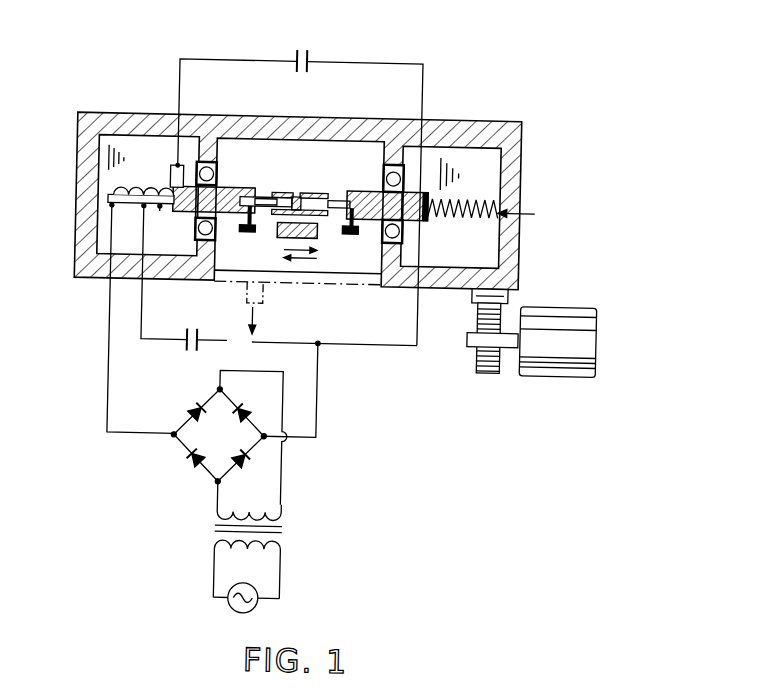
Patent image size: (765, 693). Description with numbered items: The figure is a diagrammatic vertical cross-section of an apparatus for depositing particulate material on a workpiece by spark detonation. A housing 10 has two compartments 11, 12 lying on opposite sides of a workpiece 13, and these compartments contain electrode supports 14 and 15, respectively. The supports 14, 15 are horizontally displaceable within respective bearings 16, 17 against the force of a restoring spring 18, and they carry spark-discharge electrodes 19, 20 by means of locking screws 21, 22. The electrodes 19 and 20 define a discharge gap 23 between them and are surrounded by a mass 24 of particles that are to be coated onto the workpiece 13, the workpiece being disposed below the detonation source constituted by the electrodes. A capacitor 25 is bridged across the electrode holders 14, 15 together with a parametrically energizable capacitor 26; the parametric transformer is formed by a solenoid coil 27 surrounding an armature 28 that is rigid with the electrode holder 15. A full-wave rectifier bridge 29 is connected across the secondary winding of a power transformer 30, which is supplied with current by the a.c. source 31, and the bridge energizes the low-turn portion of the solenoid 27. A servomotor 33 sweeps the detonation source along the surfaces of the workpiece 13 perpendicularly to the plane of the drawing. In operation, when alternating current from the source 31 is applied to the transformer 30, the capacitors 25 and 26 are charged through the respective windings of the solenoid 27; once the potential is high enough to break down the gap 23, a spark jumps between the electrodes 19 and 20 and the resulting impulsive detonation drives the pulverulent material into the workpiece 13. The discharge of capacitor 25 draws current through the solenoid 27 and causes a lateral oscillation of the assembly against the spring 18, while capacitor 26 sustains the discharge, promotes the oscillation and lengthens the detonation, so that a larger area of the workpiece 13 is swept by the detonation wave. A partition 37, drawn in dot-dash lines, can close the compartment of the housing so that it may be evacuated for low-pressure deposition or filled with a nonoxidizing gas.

The housing 10 is at (518, 122).
The compartment 11 is at (500, 157).
The compartment 12 is at (96, 240).
The workpiece 13 is at (279, 232).
The electrode support 14 is at (397, 191).
The electrode support 15 is at (192, 189).
The bearing 16 is at (405, 223).
The bearing 17 is at (196, 225).
The restoring spring 18 is at (495, 211).
The spark-discharge electrode 19 is at (333, 189).
The spark-discharge electrode 20 is at (263, 198).
The locking screw 21 is at (351, 233).
The locking screw 22 is at (246, 229).
The discharge gap 23 is at (300, 192).
The mass of particles 24 is at (278, 192).
The capacitor 25 is at (305, 53).
The parametrically energizable capacitor 26 is at (190, 345).
The solenoid coil 27 is at (150, 191).
The armature 28 is at (108, 201).
The full-wave rectifier bridge 29 is at (184, 441).
The power transformer 30 is at (279, 527).
The a.c. source 31 is at (266, 608).
The servomotor 33 is at (549, 372).
The partition 37 is at (230, 285).